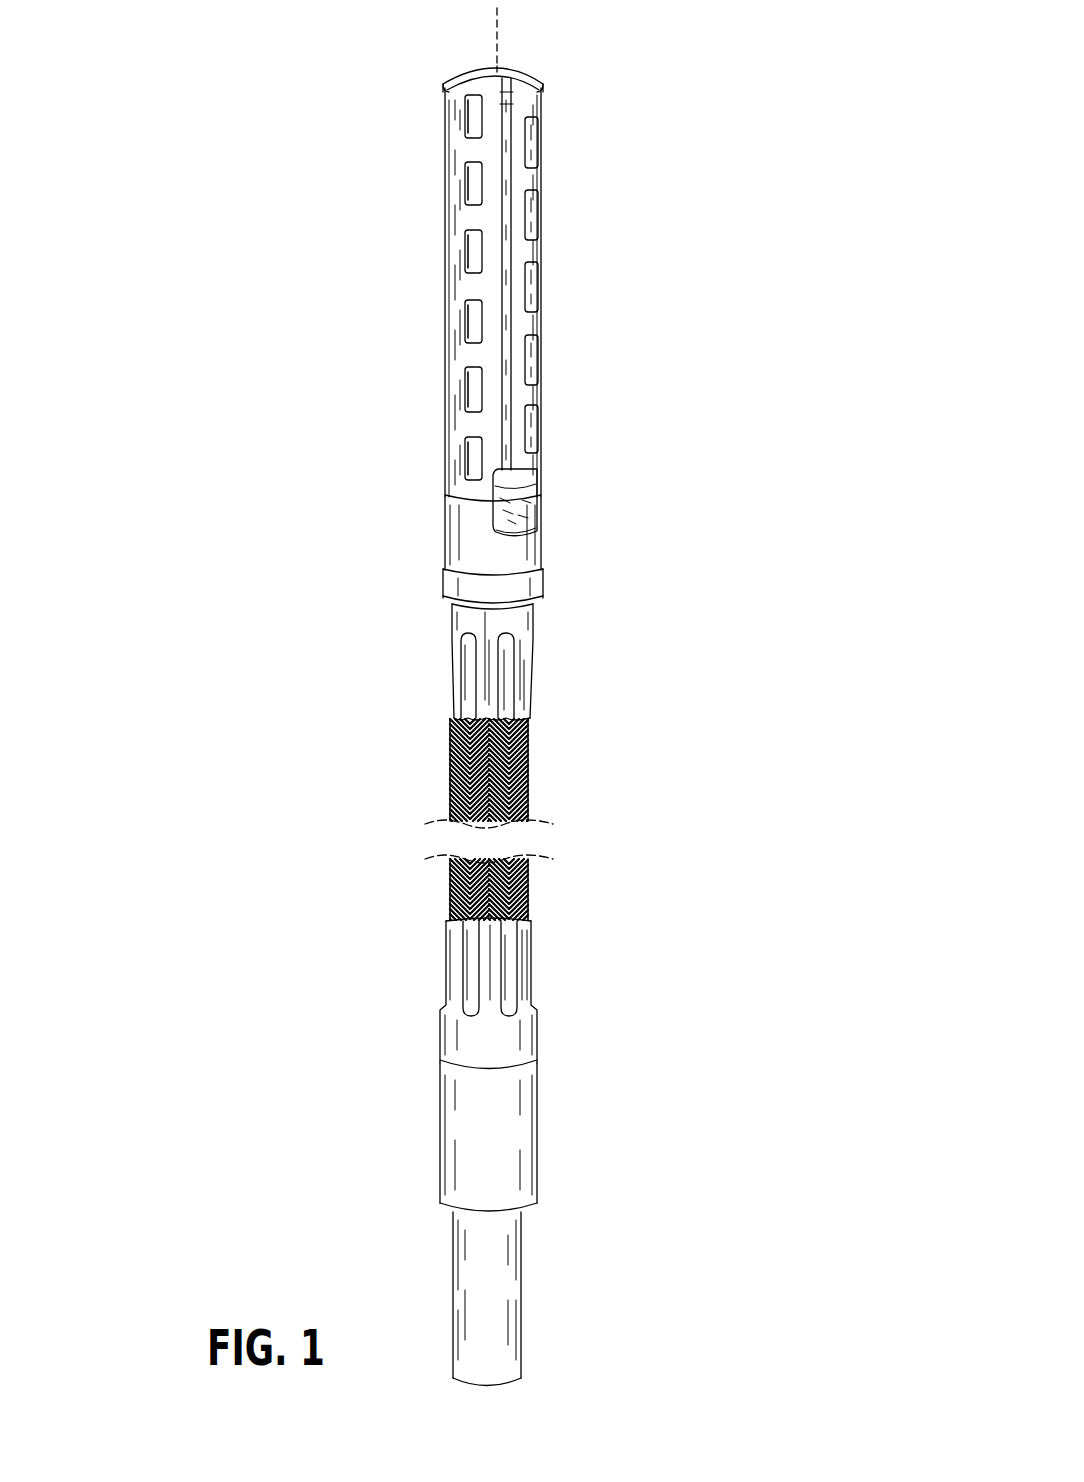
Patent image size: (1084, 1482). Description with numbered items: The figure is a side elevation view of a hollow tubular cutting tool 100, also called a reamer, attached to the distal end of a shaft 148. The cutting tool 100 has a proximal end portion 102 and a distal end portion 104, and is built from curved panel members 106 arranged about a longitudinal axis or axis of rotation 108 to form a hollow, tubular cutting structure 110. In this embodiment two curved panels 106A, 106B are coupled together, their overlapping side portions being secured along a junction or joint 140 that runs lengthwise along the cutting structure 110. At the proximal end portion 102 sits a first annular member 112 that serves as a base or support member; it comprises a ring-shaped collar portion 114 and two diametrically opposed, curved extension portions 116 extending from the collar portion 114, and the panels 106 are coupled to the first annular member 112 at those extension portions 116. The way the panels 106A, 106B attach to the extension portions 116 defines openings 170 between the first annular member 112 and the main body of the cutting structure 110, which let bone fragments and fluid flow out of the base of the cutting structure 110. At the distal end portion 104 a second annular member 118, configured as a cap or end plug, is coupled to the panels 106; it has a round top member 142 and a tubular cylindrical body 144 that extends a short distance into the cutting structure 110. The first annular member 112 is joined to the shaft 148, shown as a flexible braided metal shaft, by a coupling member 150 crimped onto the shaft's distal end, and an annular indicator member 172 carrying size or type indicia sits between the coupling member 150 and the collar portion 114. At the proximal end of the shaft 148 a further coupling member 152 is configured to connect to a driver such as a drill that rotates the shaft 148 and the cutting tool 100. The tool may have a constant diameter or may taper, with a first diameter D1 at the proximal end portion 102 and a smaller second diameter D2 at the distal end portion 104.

The hollow tubular cutting tool 100 is at (675, 211).
The proximal end portion 102 is at (562, 587).
The distal end portion 104 is at (412, 108).
The curved panel members 106 is at (367, 287).
The curved panel 106A is at (462, 295).
The curved panel 106B is at (532, 320).
The longitudinal axis 108 is at (500, 62).
The cutting structure 110 is at (560, 277).
The first annular member 112 is at (455, 555).
The collar portion 114 is at (527, 555).
The extension portions 116 is at (450, 520).
The second annular member 118 is at (585, 81).
The joint 140 is at (503, 362).
The top member 142 is at (542, 78).
The tubular cylindrical body 144 is at (478, 74).
The shaft 148 is at (534, 768).
The coupling member 150 is at (470, 655).
The coupling member 152 is at (463, 1138).
The openings 170 is at (538, 493).
The annular indicator member 172 is at (447, 586).
The first diameter D1 is at (443, 457).
The second diameter D2 is at (443, 158).